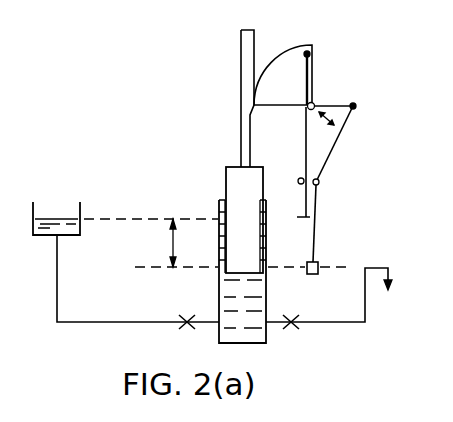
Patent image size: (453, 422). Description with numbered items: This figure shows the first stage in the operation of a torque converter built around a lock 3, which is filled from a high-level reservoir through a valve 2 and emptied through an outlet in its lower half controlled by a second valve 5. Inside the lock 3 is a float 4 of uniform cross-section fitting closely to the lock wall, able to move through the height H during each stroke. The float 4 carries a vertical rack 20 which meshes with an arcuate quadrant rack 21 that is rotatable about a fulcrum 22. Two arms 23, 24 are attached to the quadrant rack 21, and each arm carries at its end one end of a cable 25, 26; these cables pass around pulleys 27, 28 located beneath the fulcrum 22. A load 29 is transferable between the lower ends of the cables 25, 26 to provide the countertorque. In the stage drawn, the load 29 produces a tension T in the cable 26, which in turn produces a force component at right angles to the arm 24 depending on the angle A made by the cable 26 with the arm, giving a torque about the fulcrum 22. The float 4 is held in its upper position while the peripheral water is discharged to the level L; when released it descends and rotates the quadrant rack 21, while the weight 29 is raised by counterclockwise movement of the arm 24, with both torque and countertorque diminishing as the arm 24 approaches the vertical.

The valve 2 is at (188, 329).
The lock 3 is at (219, 300).
The float 4 is at (236, 205).
The second valve 5 is at (291, 330).
The vertical rack 20 is at (241, 92).
The quadrant rack 21 is at (292, 57).
The fulcrum 22 is at (314, 104).
The arm 23 is at (313, 67).
The arm 24 is at (340, 102).
The cable 25 is at (306, 140).
The cable 26 is at (330, 156).
The pulley 27 is at (299, 178).
The pulley 28 is at (320, 185).
The load 29 is at (313, 275).
The angle A is at (345, 123).
The height H is at (183, 243).
The level L is at (235, 264).
The tension T is at (315, 240).